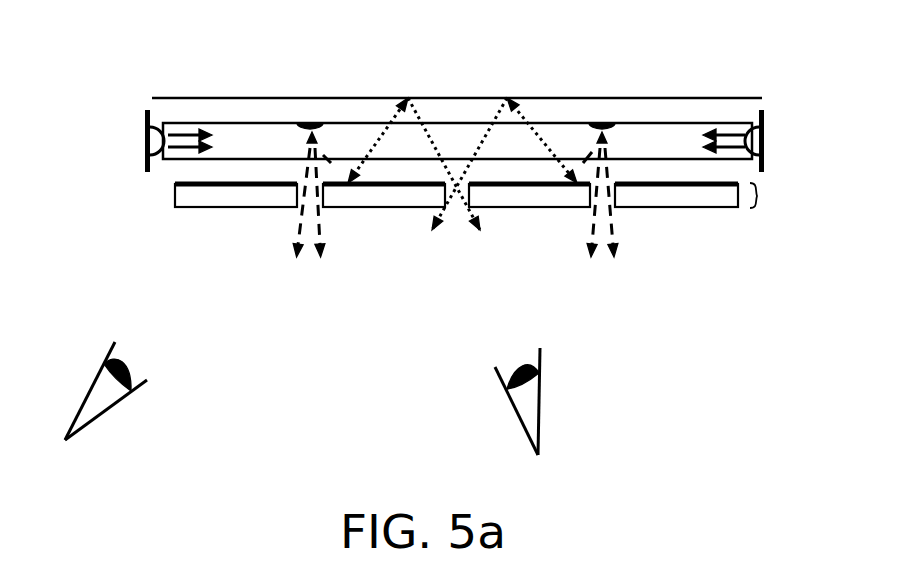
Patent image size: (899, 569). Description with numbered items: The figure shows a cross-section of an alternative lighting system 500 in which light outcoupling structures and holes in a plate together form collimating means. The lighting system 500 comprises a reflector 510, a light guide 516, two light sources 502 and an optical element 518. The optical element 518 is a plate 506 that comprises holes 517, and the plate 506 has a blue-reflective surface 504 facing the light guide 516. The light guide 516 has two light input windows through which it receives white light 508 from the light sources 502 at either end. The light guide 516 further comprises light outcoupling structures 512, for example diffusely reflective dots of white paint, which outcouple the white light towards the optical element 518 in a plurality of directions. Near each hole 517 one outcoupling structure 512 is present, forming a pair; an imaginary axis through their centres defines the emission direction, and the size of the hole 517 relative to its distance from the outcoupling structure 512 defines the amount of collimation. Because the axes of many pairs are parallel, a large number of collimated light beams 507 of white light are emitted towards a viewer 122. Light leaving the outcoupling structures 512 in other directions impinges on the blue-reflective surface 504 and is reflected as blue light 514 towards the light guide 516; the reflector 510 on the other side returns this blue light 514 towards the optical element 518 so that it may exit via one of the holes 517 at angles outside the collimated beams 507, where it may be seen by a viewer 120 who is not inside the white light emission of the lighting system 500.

The lighting system 500 is at (112, 70).
The light source 502 is at (145, 142).
The blue-reflective surface 504 is at (162, 188).
The plate 506 is at (185, 197).
The collimated light beam 507 is at (300, 227).
The light coupled into light guide 508 is at (185, 133).
The reflector 510 is at (250, 97).
The light outcoupling structure 512 is at (312, 122).
The blue light 514 is at (377, 140).
The light guide 516 is at (563, 138).
The hole 517 is at (455, 205).
The optical element 518 is at (763, 196).
The viewer 120 is at (108, 407).
The viewer 122 is at (515, 413).